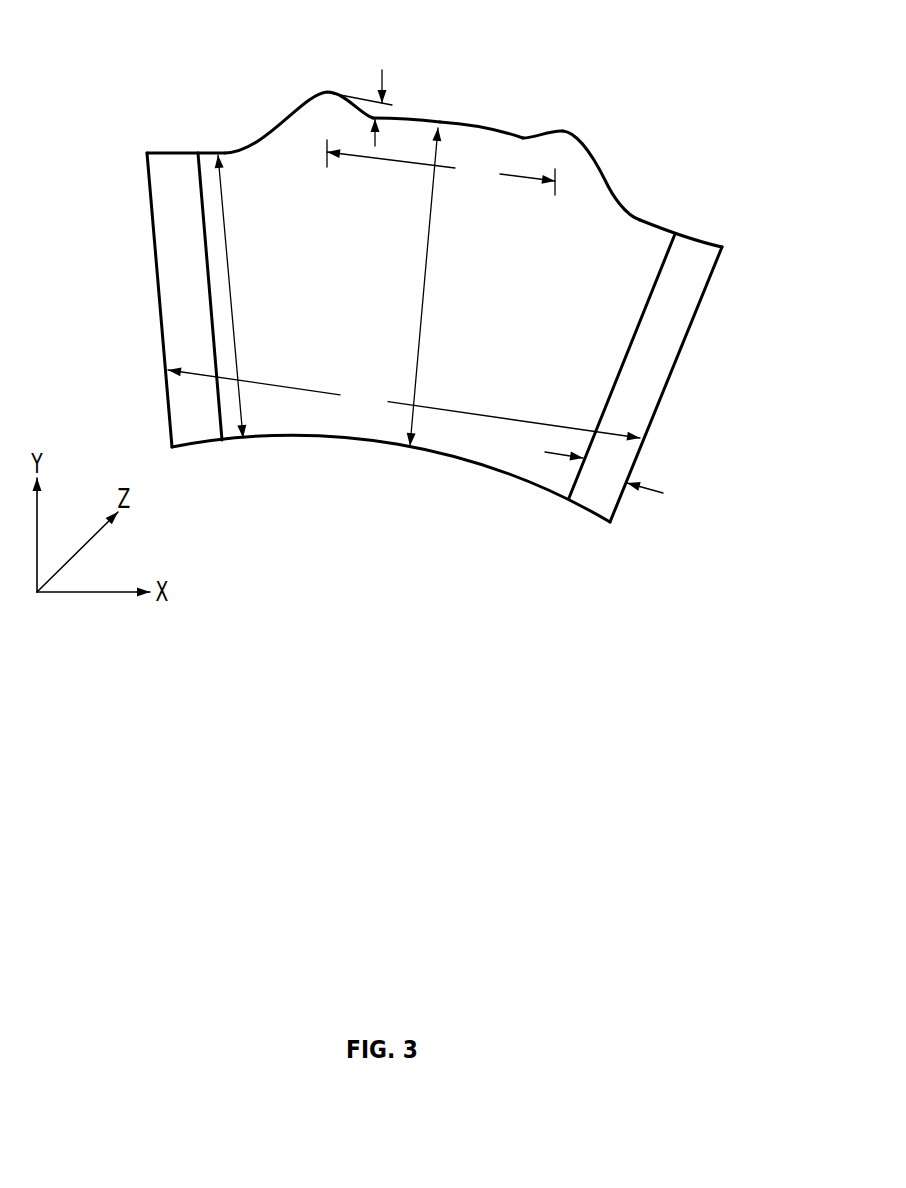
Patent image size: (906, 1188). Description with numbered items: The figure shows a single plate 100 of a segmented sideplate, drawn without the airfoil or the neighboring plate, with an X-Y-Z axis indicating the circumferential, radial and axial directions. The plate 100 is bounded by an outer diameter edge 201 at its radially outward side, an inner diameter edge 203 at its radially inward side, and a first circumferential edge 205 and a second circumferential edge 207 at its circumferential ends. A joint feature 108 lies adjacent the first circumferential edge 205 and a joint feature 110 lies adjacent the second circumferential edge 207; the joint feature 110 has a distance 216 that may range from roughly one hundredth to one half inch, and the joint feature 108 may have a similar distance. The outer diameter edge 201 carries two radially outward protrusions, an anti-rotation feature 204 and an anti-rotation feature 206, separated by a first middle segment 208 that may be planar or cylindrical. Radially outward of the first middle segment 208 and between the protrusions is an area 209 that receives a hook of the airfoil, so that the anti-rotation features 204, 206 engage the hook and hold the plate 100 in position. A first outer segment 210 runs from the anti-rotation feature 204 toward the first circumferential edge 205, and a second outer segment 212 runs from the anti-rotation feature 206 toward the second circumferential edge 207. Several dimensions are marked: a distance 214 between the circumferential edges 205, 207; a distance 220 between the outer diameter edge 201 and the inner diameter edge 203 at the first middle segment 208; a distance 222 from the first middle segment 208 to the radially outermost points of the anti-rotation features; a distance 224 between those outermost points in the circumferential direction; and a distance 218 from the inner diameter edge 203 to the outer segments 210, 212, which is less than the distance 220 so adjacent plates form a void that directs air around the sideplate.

The plate 100 is at (329, 292).
The joint feature 108 is at (163, 149).
The joint feature 110 is at (701, 236).
The outer diameter edge 201 is at (618, 198).
The inner diameter edge 203 is at (312, 438).
The anti-rotation feature 204 is at (318, 92).
The first circumferential edge 205 is at (153, 249).
The anti-rotation feature 206 is at (577, 136).
The second circumferential edge 207 is at (677, 362).
The first middle segment 208 is at (413, 125).
The area 209 is at (485, 127).
The first outer segment 210 is at (229, 152).
The second outer segment 212 is at (647, 223).
The distance 214 is at (404, 403).
The distance 216 is at (602, 472).
The distance 218 is at (232, 296).
The distance 220 is at (426, 287).
The distance 222 is at (381, 108).
The distance 224 is at (441, 167).